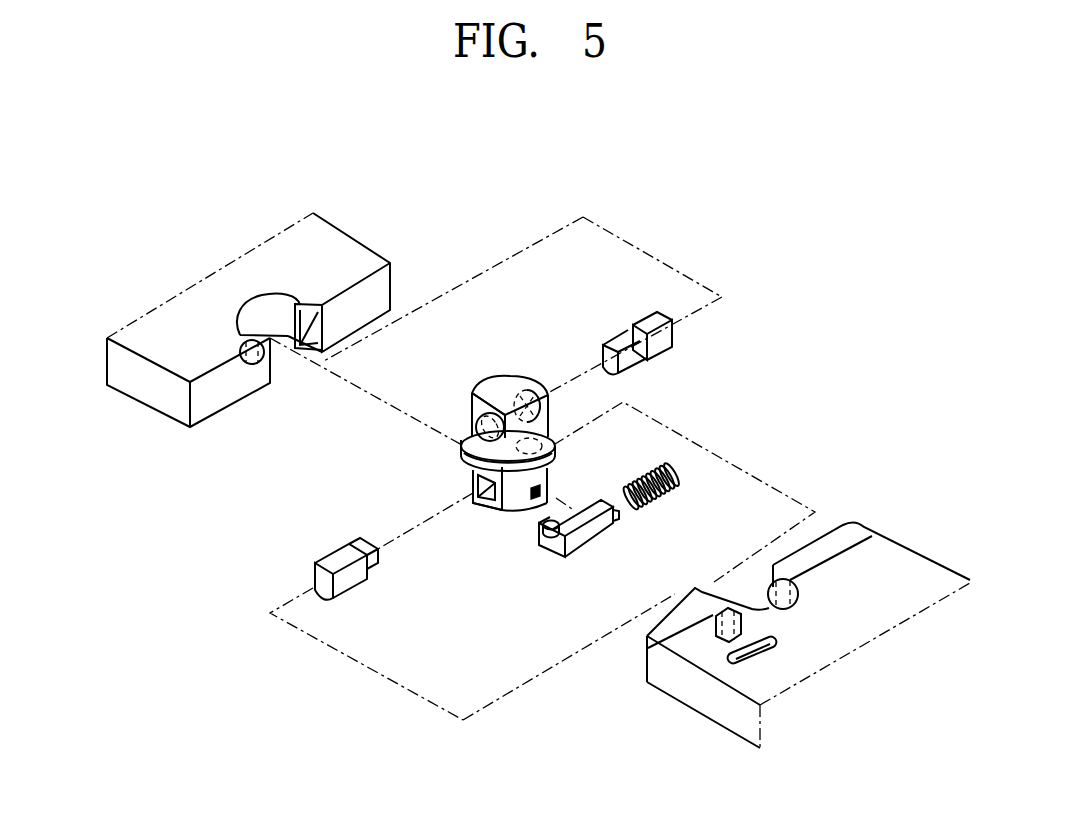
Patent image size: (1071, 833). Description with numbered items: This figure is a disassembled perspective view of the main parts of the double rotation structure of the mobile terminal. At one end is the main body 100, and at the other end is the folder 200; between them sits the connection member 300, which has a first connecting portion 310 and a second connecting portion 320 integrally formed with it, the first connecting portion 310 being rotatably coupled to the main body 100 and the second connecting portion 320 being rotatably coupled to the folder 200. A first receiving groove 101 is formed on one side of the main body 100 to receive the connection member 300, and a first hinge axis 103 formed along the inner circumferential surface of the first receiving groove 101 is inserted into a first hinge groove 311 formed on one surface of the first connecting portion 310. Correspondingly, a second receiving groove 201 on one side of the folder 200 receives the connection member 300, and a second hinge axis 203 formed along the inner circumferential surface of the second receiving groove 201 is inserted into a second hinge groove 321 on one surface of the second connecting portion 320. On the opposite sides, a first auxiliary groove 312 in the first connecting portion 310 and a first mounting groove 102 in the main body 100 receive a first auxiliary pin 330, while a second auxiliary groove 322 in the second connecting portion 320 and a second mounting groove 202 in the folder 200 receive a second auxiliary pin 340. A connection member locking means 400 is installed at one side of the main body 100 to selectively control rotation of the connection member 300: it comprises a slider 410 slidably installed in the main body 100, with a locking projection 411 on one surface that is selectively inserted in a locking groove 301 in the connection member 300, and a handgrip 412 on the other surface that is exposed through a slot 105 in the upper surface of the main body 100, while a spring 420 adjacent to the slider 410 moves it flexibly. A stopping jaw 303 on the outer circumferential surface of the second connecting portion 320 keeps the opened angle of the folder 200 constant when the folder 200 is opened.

The main body 100 is at (778, 629).
The first receiving groove 101 is at (797, 603).
The first mounting groove 102 is at (645, 673).
The first hinge axis 103 is at (868, 540).
The slot 105 is at (765, 652).
The folder 200 is at (275, 303).
The second receiving groove 201 is at (270, 300).
The second mounting groove 202 is at (303, 300).
The second hinge axis 203 is at (245, 345).
The connection member 300 is at (497, 433).
The locking groove 301 is at (545, 473).
The stopping jaw 303 is at (476, 422).
The first connecting portion 310 is at (512, 509).
The first hinge groove 311 is at (548, 436).
The first auxiliary groove 312 is at (481, 500).
The second connecting portion 320 is at (480, 389).
The second hinge groove 321 is at (470, 430).
The second auxiliary groove 322 is at (534, 396).
The first auxiliary pin 330 is at (320, 558).
The second auxiliary pin 340 is at (640, 325).
The connection member locking means 400 is at (583, 545).
The slider 410 is at (588, 540).
The locking projection 411 is at (560, 516).
The handgrip 412 is at (546, 548).
The spring 420 is at (662, 490).